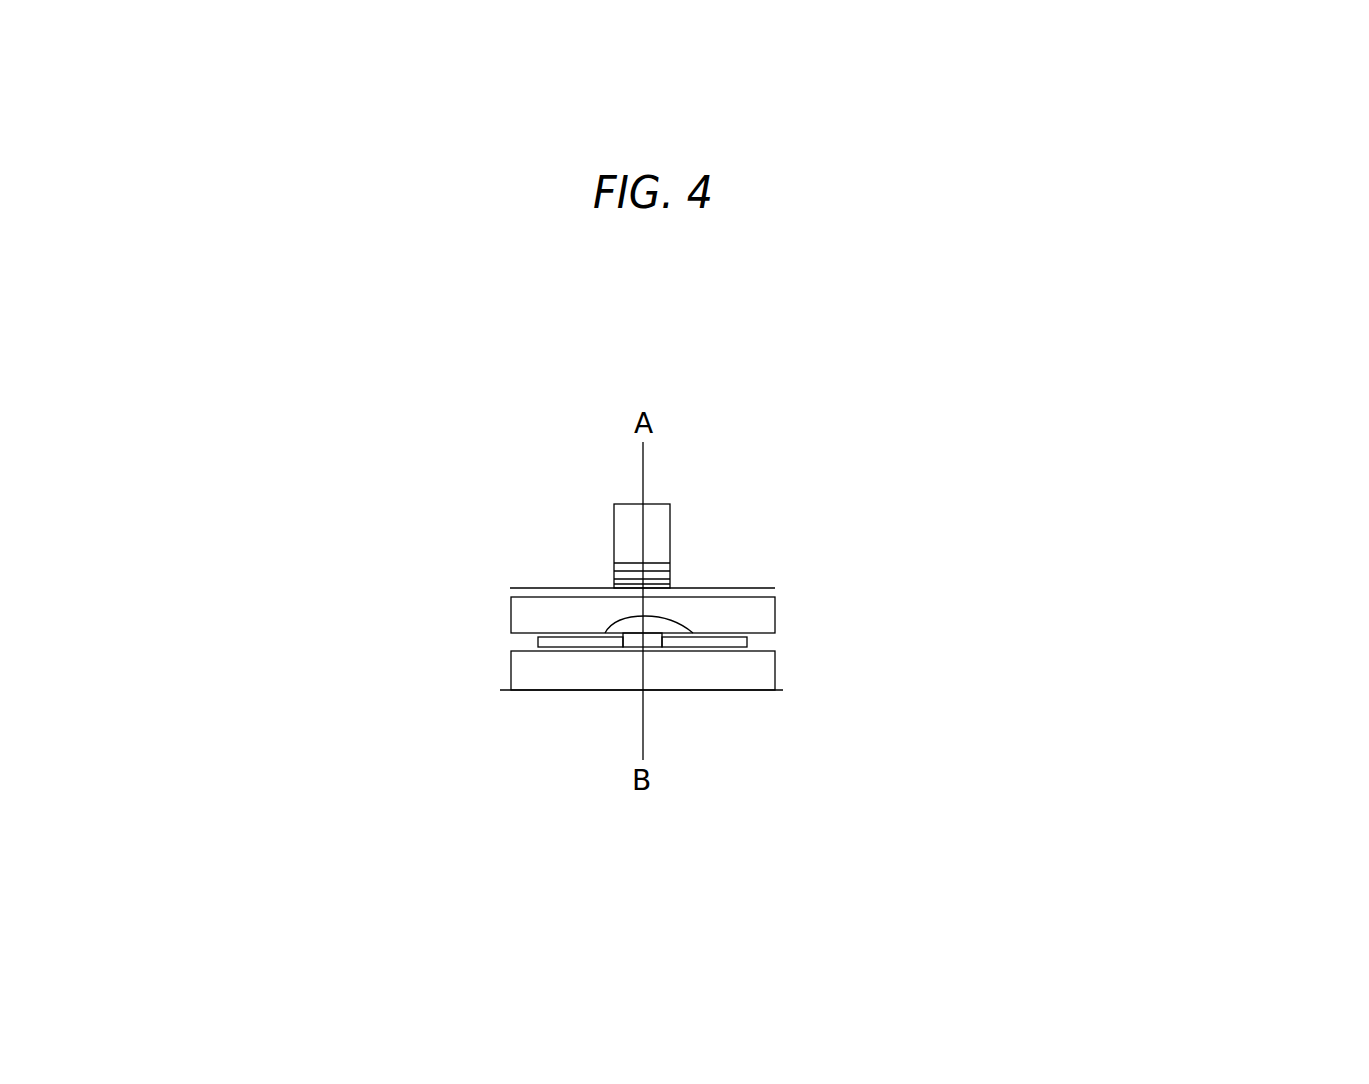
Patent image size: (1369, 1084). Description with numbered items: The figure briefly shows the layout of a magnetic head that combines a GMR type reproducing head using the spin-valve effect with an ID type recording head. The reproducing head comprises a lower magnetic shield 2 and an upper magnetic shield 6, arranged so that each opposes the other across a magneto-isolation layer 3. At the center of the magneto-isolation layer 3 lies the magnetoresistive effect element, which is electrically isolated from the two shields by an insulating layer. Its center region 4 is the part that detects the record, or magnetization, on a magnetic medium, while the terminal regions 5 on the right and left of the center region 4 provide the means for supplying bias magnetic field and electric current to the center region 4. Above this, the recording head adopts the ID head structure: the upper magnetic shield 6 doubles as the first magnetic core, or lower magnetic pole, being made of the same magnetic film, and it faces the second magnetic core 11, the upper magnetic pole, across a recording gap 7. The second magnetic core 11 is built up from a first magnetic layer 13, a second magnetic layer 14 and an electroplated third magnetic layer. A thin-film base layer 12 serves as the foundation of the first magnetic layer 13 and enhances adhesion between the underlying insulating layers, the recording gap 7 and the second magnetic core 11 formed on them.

The second magnetic core 11 is at (729, 320).
The second magnetic layer 14 is at (665, 567).
The first magnetic layer 13 is at (615, 573).
The base layer 12 is at (615, 580).
The recording gap 7 is at (762, 593).
The upper magnetic shield 6 is at (762, 620).
The magneto-isolation layer 3 is at (517, 643).
The lower magnetic shield 2 is at (558, 677).
The terminal regions of magnetoresistive effect element 5 is at (693, 633).
The center region of magnetoresistive effect element 4 is at (652, 645).